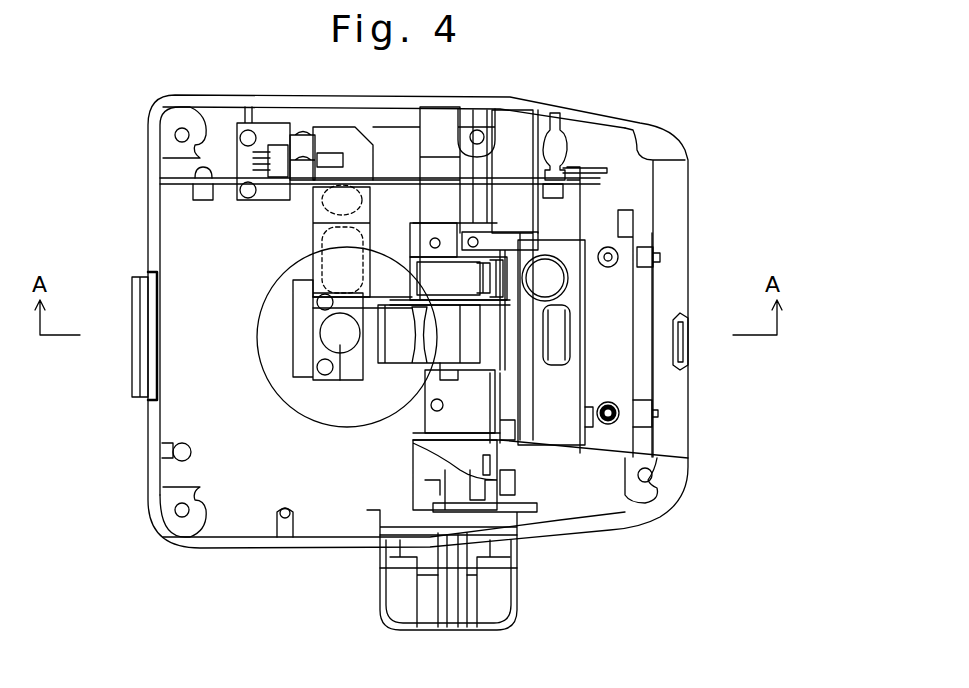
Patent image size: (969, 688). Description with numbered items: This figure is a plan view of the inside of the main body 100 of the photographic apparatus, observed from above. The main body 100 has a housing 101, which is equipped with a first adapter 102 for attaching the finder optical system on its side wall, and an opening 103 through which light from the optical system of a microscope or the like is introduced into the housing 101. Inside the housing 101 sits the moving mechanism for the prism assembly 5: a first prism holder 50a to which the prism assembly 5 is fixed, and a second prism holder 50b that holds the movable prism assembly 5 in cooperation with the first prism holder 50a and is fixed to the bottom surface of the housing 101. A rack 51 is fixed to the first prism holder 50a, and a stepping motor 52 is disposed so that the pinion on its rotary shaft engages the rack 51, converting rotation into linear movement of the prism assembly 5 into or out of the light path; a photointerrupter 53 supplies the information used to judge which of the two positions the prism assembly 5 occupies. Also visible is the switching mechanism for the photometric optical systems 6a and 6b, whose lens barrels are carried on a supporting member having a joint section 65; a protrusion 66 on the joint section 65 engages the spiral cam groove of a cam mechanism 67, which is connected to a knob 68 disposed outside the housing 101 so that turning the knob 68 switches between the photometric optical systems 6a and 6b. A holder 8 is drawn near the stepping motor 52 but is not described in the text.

The prism assembly 5 is at (330, 190).
The photometric optical system 6a is at (396, 384).
The photometric optical system 6b is at (408, 243).
The light emitting element holder 8 is at (547, 347).
The first prism holder 50a is at (387, 197).
The second prism holder 50b is at (300, 320).
The rack 51 is at (508, 137).
The stepping motor 52 is at (555, 258).
The photointerrupter 53 is at (277, 233).
The joint section 65 is at (500, 417).
The protrusion 66 is at (440, 455).
The cam mechanism 67 is at (415, 480).
The knob 68 is at (517, 597).
The main body 100 is at (522, 95).
The housing 101 is at (633, 126).
The first adapter 102 is at (132, 307).
The opening 103 is at (345, 398).